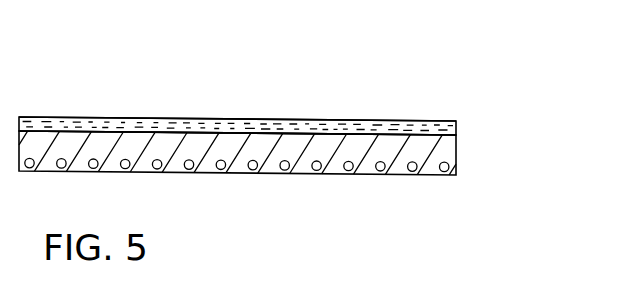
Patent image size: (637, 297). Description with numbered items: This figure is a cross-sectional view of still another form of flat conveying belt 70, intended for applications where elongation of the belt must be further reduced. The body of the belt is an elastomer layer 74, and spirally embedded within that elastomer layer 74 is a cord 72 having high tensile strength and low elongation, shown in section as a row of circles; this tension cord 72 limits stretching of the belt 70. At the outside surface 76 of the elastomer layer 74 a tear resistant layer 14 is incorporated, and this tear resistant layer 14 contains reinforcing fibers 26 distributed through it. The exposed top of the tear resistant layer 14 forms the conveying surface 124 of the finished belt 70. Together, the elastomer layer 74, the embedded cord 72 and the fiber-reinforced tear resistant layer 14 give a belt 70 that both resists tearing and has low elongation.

The conveying belt 70 is at (280, 132).
The cord 72 is at (377, 172).
The elastomer layer 74 is at (450, 153).
The outside surface 76 is at (88, 128).
The reinforcing fibers 26 is at (190, 127).
The tear resistant layer 14 is at (272, 122).
The conveying surface 124 is at (333, 120).